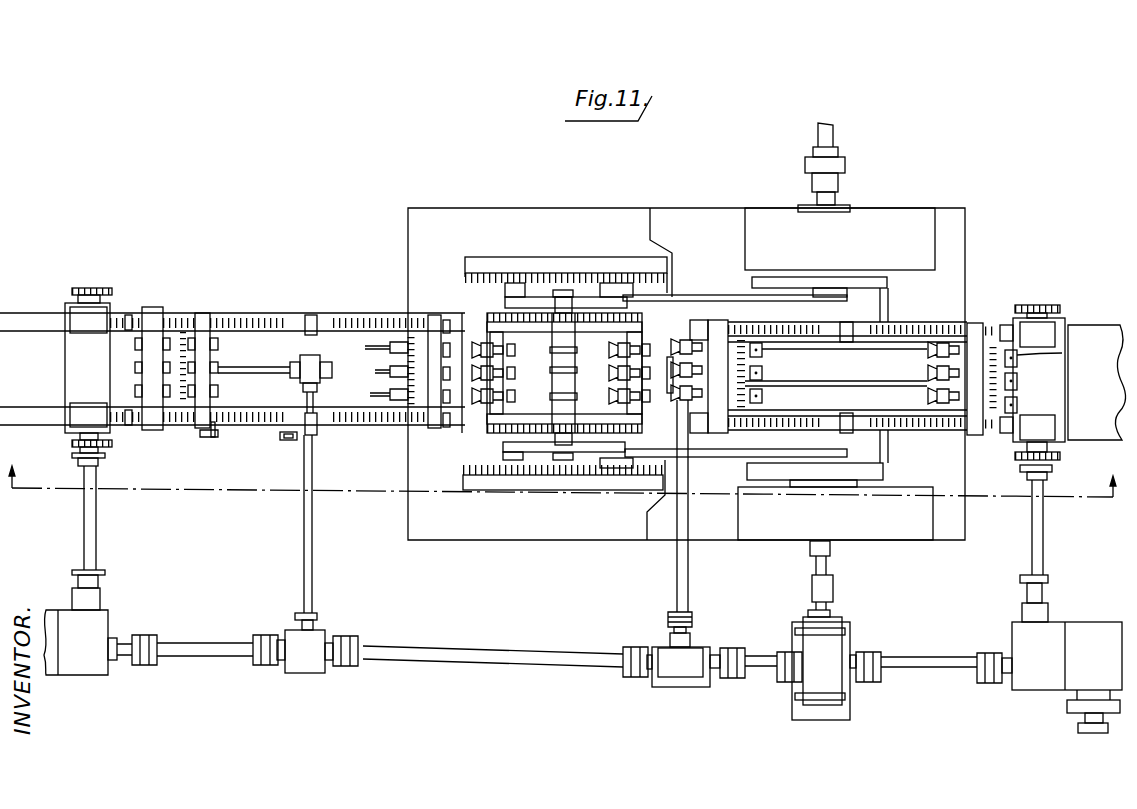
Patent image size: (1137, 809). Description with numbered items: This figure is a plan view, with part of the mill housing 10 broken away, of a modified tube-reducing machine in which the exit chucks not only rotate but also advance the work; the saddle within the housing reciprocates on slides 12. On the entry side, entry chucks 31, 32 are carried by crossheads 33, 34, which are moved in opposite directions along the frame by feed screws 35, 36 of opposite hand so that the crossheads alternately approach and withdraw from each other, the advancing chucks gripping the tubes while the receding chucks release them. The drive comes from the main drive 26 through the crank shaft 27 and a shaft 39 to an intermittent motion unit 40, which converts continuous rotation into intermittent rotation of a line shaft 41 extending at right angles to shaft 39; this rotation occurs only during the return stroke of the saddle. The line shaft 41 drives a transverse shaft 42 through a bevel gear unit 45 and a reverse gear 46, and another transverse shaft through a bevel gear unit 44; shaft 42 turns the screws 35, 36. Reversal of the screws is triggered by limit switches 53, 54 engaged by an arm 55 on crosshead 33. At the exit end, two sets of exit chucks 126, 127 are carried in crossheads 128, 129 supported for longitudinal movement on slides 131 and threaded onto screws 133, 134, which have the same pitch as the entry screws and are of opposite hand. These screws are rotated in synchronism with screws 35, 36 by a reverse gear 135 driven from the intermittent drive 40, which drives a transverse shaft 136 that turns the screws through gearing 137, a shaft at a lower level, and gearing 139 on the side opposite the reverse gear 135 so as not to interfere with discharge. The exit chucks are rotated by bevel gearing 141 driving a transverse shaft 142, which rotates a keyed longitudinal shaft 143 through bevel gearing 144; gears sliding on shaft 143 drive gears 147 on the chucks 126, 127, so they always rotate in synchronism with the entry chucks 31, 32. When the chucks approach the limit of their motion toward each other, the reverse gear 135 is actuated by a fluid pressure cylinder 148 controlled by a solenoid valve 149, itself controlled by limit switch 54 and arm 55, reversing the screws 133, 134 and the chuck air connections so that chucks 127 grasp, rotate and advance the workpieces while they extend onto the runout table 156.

The mill housing 10 is at (541, 489).
The slides 12 is at (566, 469).
The main drive 26 is at (864, 214).
The crank shaft 27 is at (840, 548).
The entry chuck 31 is at (220, 344).
The entry chuck 32 is at (460, 415).
The crosshead 33 is at (152, 318).
The crosshead 34 is at (434, 325).
The feed screw 35 is at (385, 305).
The feed screw 36 is at (272, 303).
The shaft 39 is at (828, 607).
The intermittent motion unit 40 is at (818, 678).
The line shaft 41 is at (516, 652).
The transverse shaft 42 is at (85, 522).
The bevel gear unit 44 is at (312, 647).
The bevel gear unit 45 is at (155, 622).
The reverse gear 46 is at (50, 612).
The limit switch 53 is at (198, 440).
The limit switch 54 is at (283, 442).
The arm 55 is at (216, 436).
The exit chuck 126 is at (762, 355).
The exit chuck 127 is at (1062, 353).
The crosshead 128 is at (718, 320).
The crosshead 129 is at (975, 330).
The slides 131 is at (908, 344).
The screw 133 is at (906, 323).
The screw 134 is at (775, 322).
The reverse gear 135 is at (1070, 632).
The transverse shaft 136 is at (1032, 543).
The gearing 137 is at (1018, 460).
The gearing 139 is at (1025, 306).
The bevel gearing 141 is at (683, 665).
The transverse shaft 142 is at (677, 585).
The shaft 143 is at (903, 385).
The bevel gearing 144 is at (665, 362).
The gears 147 is at (762, 392).
The fluid pressure cylinder 148 is at (1068, 708).
The solenoid valve 149 is at (1095, 733).
The runout table 156 is at (1099, 382).